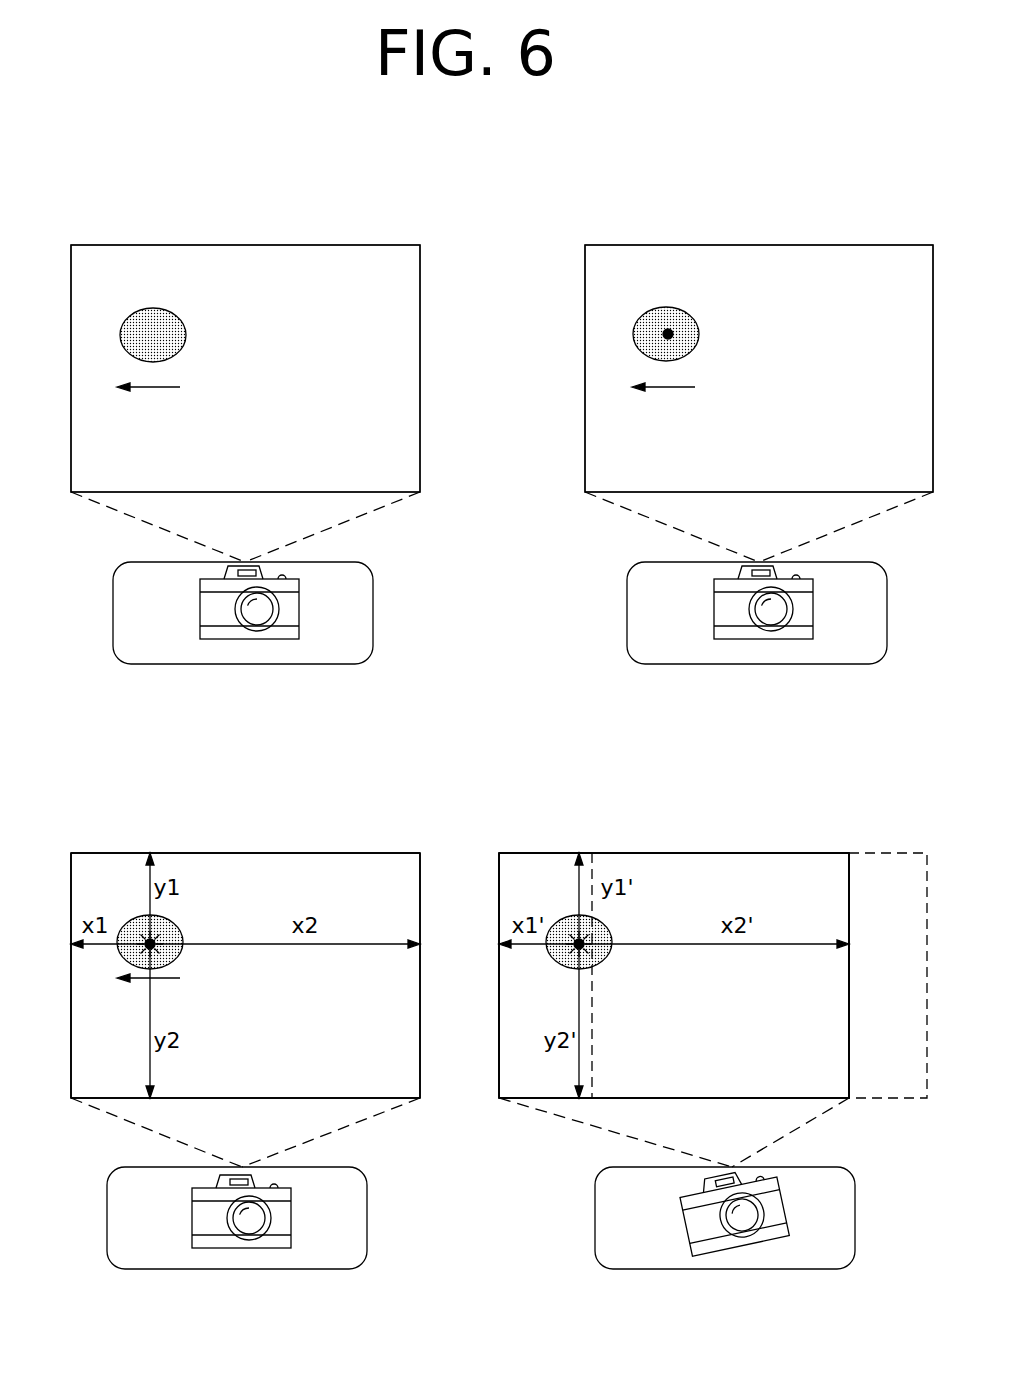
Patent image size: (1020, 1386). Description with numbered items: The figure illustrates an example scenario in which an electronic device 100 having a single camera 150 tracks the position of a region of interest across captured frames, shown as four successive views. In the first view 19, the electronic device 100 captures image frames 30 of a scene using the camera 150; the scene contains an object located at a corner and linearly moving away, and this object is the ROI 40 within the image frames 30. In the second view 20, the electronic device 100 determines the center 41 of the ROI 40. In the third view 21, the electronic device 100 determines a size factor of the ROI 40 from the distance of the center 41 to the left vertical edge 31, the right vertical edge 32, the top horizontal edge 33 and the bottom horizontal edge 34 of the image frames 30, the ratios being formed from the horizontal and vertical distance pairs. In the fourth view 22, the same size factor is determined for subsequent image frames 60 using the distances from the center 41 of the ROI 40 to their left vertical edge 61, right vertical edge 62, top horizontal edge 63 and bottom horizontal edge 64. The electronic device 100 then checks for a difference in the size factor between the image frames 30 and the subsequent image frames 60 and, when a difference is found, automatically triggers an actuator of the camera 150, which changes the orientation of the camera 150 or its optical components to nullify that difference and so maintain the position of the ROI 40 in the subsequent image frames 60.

The first scenario view 19 is at (315, 233).
The second scenario view 20 is at (833, 226).
The third scenario view 21 is at (325, 820).
The fourth scenario view 22 is at (825, 820).
The image frames 30 is at (211, 252).
The left vertical edge 31 is at (71, 1000).
The right vertical edge 32 is at (420, 970).
The top horizontal edge 33 is at (281, 853).
The bottom horizontal edge 34 is at (221, 1098).
The ROI 40 is at (128, 315).
The center 41 is at (668, 325).
The subsequent image frames 60 is at (506, 865).
The left vertical edge 61 is at (499, 1067).
The right vertical edge 62 is at (849, 1015).
The top horizontal edge 63 is at (571, 853).
The bottom horizontal edge 64 is at (545, 1098).
The electronic device 100 is at (129, 625).
The camera 150 is at (293, 613).